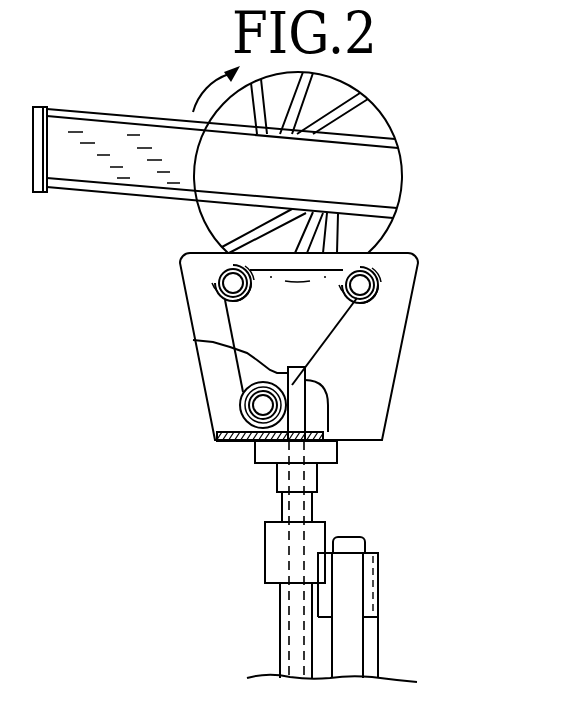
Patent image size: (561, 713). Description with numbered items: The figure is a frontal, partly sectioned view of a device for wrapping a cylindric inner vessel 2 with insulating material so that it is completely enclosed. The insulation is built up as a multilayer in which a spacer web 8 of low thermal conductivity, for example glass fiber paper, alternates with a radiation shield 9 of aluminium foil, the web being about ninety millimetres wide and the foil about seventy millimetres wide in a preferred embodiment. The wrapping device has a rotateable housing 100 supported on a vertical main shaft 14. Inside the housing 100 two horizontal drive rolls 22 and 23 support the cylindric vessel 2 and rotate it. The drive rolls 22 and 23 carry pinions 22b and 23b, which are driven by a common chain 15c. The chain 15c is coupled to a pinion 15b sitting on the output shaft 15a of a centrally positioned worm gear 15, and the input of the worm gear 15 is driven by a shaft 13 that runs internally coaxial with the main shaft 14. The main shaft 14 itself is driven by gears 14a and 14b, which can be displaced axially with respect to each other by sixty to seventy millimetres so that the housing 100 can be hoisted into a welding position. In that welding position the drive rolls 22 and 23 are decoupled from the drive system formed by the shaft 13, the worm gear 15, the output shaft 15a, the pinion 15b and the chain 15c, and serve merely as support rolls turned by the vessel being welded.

The inner vessel 2 is at (370, 113).
The spacer web 8 is at (360, 143).
The radiation shield 9 is at (370, 187).
The drive roll 22 is at (222, 272).
The pinion 22b is at (215, 282).
The drive roll 23 is at (377, 275).
The pinion 23b is at (377, 284).
The rotateable housing 100 is at (205, 325).
The common chain 15c is at (347, 333).
The worm gear 15 is at (240, 405).
The shaft 13 is at (305, 400).
The pinion 15b is at (217, 437).
The output shaft 15a is at (245, 432).
The main shaft 14 is at (308, 505).
The gear 14a is at (265, 558).
The gear 14b is at (378, 568).